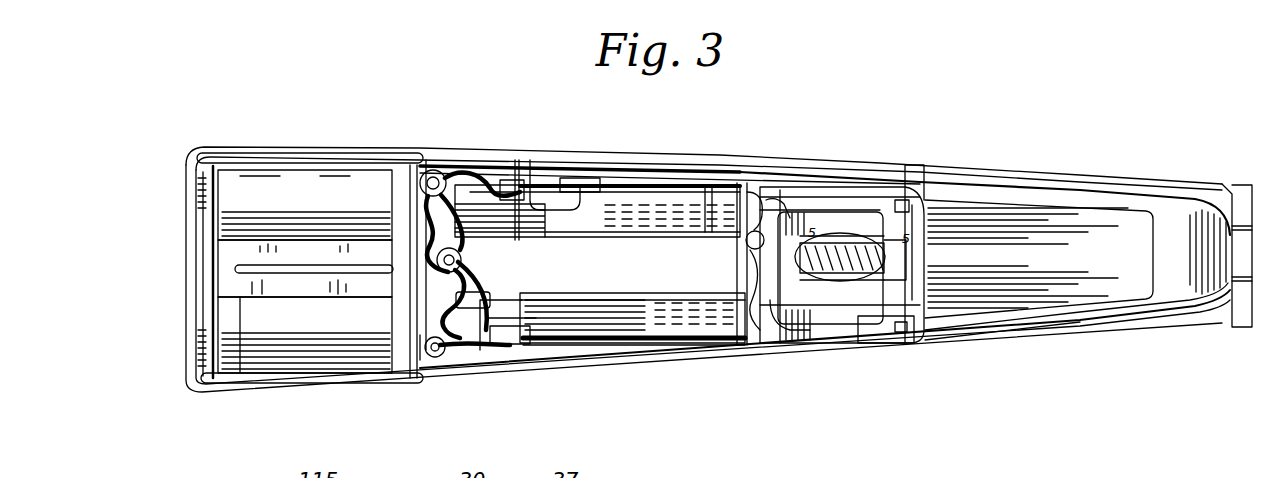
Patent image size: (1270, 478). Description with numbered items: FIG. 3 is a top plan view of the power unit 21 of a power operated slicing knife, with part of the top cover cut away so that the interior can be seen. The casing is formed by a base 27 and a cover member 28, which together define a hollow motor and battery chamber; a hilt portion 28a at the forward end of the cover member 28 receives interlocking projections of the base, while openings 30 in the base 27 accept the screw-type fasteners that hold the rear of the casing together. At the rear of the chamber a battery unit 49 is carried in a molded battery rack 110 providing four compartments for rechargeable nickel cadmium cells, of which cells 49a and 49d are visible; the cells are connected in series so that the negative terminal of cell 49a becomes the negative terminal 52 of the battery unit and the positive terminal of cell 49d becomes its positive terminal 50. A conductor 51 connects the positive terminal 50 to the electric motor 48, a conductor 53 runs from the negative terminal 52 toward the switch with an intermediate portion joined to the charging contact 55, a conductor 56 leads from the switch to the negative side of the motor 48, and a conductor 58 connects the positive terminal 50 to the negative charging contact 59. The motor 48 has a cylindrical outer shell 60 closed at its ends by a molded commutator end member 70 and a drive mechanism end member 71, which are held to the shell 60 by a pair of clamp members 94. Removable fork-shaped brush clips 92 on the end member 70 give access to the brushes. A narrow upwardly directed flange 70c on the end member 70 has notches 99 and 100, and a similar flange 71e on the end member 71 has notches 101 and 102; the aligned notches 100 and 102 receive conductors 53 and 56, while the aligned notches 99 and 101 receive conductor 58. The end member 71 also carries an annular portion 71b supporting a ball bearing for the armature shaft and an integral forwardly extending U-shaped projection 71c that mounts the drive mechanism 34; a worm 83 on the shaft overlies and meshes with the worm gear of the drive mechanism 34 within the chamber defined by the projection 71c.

The power unit 21 is at (358, 396).
The base member 27 is at (352, 151).
The cover member 28 is at (1035, 342).
The hilt portion 28a is at (1245, 298).
The openings 30 is at (449, 158).
The drive mechanism 34 is at (873, 192).
The electric motor 48 is at (560, 302).
The battery unit 49 is at (338, 350).
The battery 49a is at (268, 362).
The battery 49d is at (270, 185).
The positive terminal 50 is at (436, 152).
The conductor 51 is at (510, 166).
The negative terminal 52 is at (420, 356).
The conductor 53 is at (740, 345).
The charging terminal 55 is at (700, 231).
The conductor 56 is at (467, 298).
The conductor 58 is at (660, 184).
The negative charging terminal 59 is at (690, 297).
The cylindrical outer shell 60 is at (652, 302).
The commutator end member 70 is at (497, 254).
The flange 70c is at (552, 176).
The drive mechanism end member 71 is at (802, 320).
The annular portion 71b is at (771, 200).
The U-shaped projection 71c is at (826, 190).
The flange 71e is at (736, 192).
The worm 83 is at (857, 347).
The brush clips 92 is at (513, 187).
The clamp members 94 is at (650, 184).
The notch 99 is at (586, 172).
The notch 100 is at (550, 302).
The notch 101 is at (707, 185).
The notch 102 is at (727, 297).
The battery rack 110 is at (226, 270).